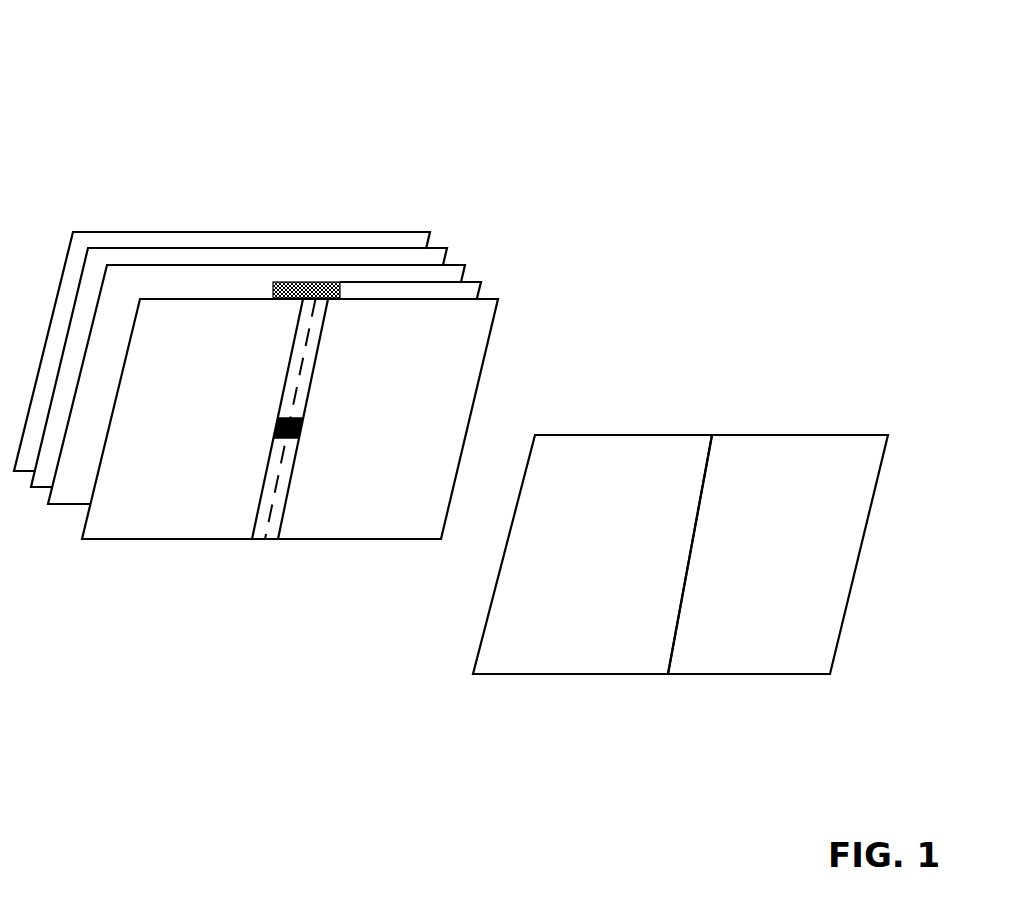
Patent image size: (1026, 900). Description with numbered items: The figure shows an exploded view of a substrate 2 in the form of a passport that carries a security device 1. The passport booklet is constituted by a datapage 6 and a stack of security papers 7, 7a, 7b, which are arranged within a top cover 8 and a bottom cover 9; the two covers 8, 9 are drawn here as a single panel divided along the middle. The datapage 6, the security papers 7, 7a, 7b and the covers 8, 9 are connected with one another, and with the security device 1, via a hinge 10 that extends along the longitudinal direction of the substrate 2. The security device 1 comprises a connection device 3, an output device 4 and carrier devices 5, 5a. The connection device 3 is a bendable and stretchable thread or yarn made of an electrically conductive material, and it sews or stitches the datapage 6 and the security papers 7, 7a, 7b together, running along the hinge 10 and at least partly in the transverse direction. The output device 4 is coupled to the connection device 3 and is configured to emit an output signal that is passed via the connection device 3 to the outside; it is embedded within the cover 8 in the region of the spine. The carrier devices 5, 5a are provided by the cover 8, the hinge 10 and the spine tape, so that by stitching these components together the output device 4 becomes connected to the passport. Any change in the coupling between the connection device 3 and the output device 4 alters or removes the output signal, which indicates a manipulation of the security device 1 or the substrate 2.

The security device 1 is at (262, 520).
The substrate 2 is at (88, 73).
The connection device 3 is at (338, 283).
The output device 4 is at (284, 441).
The carrier device 5 is at (288, 283).
The carrier device 5a is at (278, 283).
The datapage 6 is at (475, 290).
The security paper 7 is at (271, 359).
The security paper 7a is at (445, 215).
The security paper 7b is at (460, 362).
The top cover 8 is at (603, 647).
The bottom cover 9 is at (802, 647).
The hinge 10 is at (322, 283).